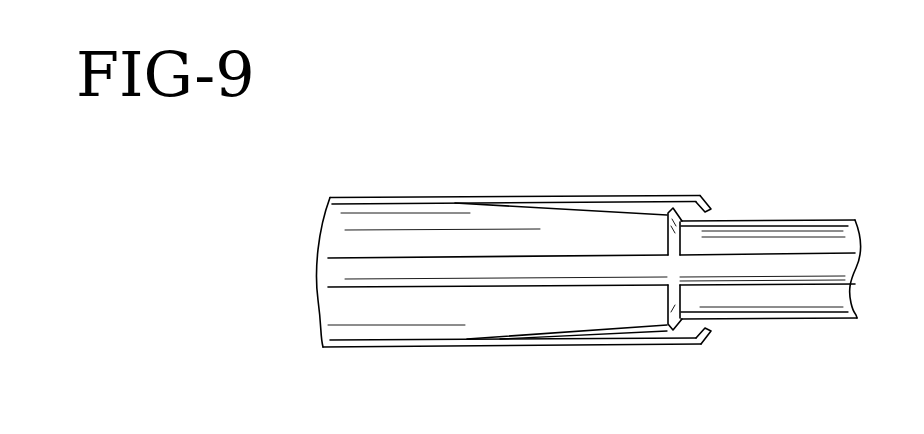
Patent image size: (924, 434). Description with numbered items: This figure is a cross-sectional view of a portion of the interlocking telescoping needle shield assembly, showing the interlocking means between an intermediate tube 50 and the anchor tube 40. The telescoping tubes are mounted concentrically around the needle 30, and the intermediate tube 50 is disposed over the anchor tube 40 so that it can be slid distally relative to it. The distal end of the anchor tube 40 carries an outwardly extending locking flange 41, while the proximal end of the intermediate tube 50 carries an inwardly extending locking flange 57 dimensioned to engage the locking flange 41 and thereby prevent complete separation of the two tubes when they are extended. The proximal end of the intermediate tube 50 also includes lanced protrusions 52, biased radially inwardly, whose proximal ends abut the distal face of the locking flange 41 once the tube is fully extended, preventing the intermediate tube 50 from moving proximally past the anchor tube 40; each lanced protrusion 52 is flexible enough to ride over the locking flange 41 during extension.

The needle 30 is at (340, 268).
The anchor tube 40 is at (827, 221).
The outwardly extending locking flange 41 is at (676, 208).
The intermediate tube 50 is at (387, 197).
The lanced protrusion 52 is at (617, 205).
The inwardly extending locking flange 57 is at (712, 204).